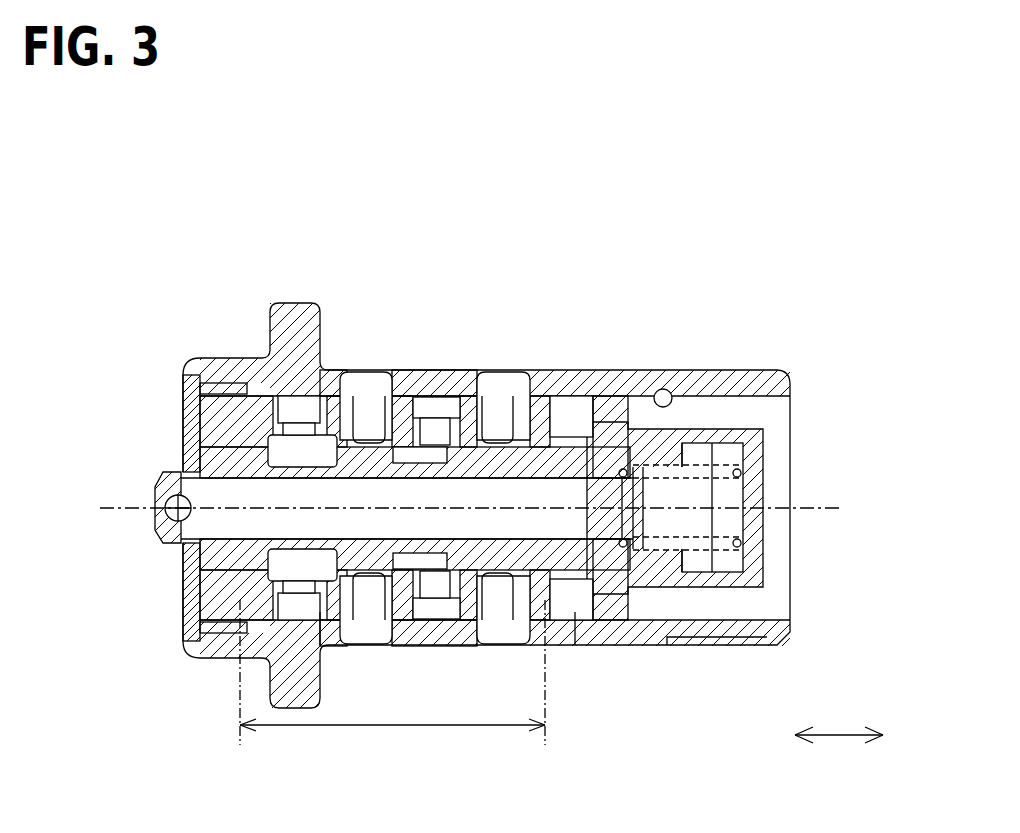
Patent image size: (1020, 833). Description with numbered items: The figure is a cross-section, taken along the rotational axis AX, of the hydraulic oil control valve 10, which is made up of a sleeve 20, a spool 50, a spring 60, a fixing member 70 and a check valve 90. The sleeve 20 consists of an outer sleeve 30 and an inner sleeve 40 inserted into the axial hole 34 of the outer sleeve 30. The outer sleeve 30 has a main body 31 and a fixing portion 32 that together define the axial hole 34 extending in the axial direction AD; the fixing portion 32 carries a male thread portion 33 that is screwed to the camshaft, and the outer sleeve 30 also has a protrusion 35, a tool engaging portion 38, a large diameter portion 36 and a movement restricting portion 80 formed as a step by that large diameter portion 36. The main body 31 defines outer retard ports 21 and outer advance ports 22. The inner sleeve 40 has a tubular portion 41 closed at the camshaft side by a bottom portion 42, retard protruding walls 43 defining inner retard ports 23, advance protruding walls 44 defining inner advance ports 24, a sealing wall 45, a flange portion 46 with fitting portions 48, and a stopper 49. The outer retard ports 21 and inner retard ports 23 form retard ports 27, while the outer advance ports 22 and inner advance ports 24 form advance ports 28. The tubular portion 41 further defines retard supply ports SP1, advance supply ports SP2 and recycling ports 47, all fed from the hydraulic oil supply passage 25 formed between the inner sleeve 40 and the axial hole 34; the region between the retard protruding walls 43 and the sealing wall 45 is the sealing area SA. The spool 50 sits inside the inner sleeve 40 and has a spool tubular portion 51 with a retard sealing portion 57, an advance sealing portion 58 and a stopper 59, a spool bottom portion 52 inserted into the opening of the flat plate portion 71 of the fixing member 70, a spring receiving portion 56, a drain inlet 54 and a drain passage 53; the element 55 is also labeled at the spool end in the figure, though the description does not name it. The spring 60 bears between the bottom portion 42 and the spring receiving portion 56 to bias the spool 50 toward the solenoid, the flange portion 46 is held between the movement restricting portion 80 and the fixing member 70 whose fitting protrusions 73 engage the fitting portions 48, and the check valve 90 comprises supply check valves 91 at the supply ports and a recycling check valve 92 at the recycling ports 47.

The hydraulic oil control valve 10 is at (793, 255).
The sleeve 20 is at (853, 318).
The outer retard ports 21 is at (522, 395).
The outer advance ports 22 is at (358, 372).
The inner retard ports 23 is at (485, 378).
The inner advance ports 24 is at (395, 395).
The hydraulic oil supply passage 25 is at (747, 622).
The retard ports 27 is at (490, 252).
The advance ports 28 is at (428, 252).
The outer sleeve 30 is at (772, 357).
The main body 31 is at (560, 395).
The fixing portion 32 is at (708, 390).
The male thread portion 33 is at (752, 372).
The axial hole 34 is at (670, 389).
The protrusion 35 is at (296, 303).
The large diameter portion 36 is at (232, 640).
The tool engaging portion 38 is at (200, 358).
The inner sleeve 40 is at (772, 428).
The tubular portion 41 is at (662, 594).
The bottom portion 42 is at (750, 560).
The retard protruding walls 43 is at (537, 382).
The advance protruding walls 44 is at (340, 405).
The sealing wall 45 is at (266, 395).
The flange portion 46 is at (215, 640).
The recycling ports 47 is at (438, 430).
The fitting portions 48 is at (225, 400).
The stopper 49 is at (705, 594).
The spool 50 is at (137, 520).
The spool tubular portion 51 is at (428, 600).
The spool bottom portion 52 is at (173, 500).
The drain passage 53 is at (230, 572).
The drain inlet 54 is at (408, 415).
The socket 55 is at (158, 475).
The spring receiving portion 56 is at (603, 594).
The retard sealing portion 57 is at (457, 600).
The advance sealing portion 58 is at (372, 600).
The stopper 59 is at (195, 568).
The spring 60 is at (727, 473).
The fixing member 70 is at (178, 384).
The flat plate portion 71 is at (235, 412).
The fitting protrusions 73 is at (200, 360).
The movement restricting portion 80 is at (262, 662).
The check valve 90 is at (480, 688).
The supply check valves 91 is at (320, 612).
The recycling check valve 92 is at (458, 625).
The retard supply ports SP1 is at (565, 412).
The advance supply ports SP2 is at (290, 405).
The rotational axis AX is at (488, 508).
The axial direction AD is at (839, 719).
The sealing area SA is at (392, 679).